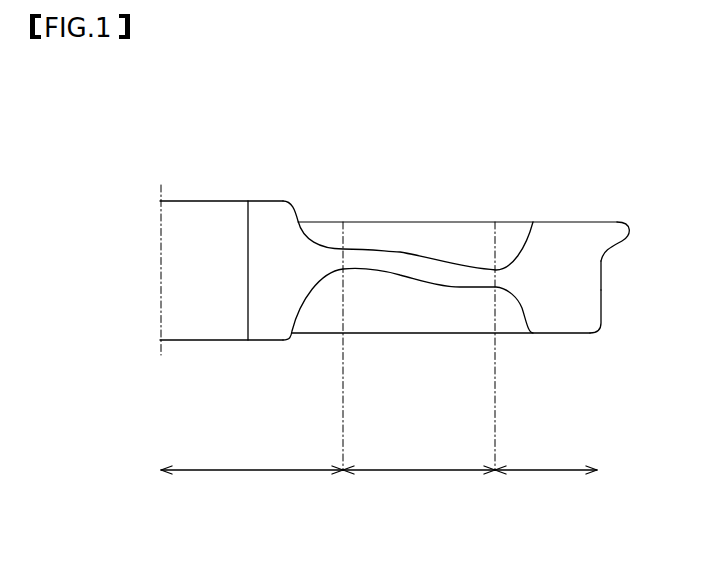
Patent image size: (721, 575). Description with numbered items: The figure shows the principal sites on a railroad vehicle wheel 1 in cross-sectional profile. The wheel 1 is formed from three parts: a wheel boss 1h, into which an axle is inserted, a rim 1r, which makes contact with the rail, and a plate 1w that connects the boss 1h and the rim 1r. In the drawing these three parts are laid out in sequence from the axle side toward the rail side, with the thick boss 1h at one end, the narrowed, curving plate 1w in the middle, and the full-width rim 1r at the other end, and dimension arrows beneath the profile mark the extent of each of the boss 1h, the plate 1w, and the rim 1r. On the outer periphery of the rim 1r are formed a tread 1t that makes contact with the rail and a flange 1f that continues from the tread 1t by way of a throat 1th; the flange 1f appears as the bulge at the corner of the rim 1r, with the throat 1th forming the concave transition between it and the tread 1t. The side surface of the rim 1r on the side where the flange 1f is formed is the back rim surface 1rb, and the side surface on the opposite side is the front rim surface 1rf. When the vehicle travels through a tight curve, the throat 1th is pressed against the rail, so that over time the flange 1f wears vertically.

The wheel 1 is at (405, 187).
The back rim surface 1rb is at (565, 221).
The front rim surface 1rf is at (558, 335).
The flange 1f is at (614, 227).
The throat 1th is at (605, 255).
The tread 1t is at (602, 311).
The wheel boss 1h is at (252, 460).
The plate 1w is at (419, 460).
The rim 1r is at (546, 460).